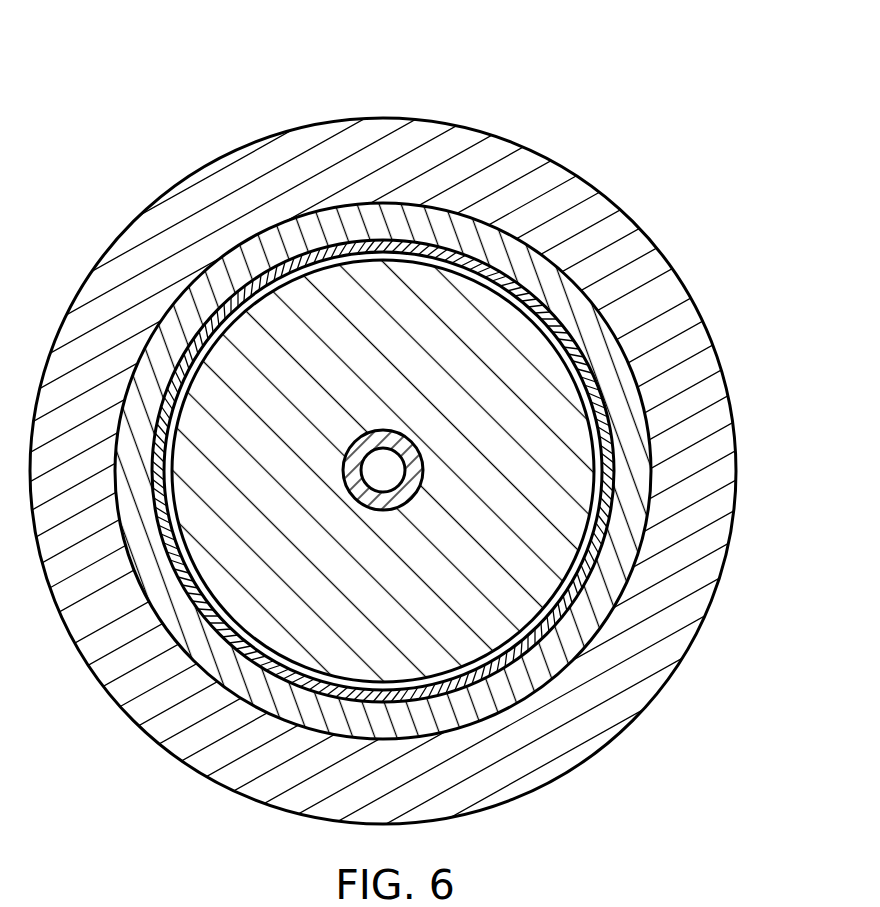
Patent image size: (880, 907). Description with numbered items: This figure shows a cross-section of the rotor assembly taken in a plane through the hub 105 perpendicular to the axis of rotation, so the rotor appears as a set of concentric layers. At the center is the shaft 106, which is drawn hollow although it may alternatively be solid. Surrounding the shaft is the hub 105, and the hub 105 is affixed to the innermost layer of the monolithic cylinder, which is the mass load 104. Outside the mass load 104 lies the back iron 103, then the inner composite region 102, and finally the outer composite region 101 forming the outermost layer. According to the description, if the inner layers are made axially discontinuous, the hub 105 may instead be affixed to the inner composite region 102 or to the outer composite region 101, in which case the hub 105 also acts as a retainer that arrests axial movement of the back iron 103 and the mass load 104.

The outer composite region 101 is at (652, 313).
The inner composite region 102 is at (627, 405).
The back iron 103 is at (613, 500).
The mass load 104 is at (567, 590).
The hub 105 is at (407, 332).
The shaft 106 is at (373, 423).